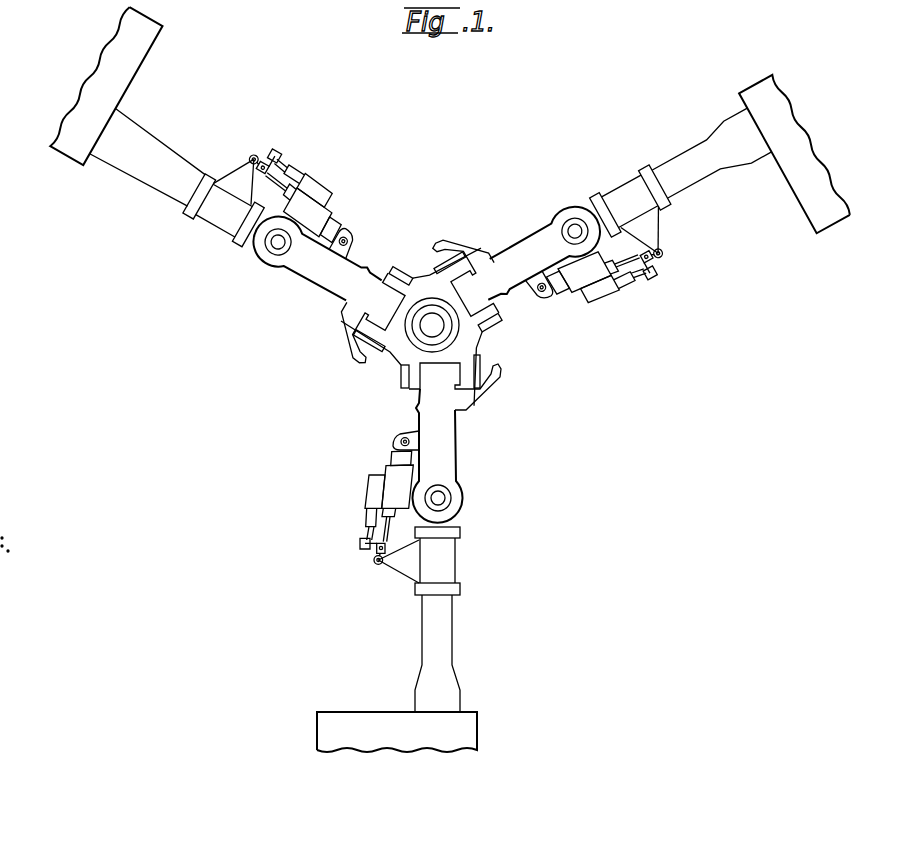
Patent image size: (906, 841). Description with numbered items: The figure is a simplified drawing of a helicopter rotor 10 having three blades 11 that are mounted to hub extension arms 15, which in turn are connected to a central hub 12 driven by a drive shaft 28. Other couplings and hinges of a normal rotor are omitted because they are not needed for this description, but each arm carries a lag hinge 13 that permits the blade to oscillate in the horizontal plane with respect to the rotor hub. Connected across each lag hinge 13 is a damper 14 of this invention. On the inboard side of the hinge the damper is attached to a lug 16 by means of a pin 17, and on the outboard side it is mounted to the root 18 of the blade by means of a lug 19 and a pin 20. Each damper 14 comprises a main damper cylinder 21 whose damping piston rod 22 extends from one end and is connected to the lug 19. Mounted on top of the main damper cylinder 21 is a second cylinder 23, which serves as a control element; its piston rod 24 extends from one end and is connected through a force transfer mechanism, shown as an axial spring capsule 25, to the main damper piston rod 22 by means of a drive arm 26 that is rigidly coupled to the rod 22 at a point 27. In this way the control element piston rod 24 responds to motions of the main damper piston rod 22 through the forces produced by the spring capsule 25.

The helicopter rotor 10 is at (416, 248).
The blade 11 is at (473, 730).
The hub 12 is at (389, 352).
The lag hinge 13 is at (451, 497).
The damper 14 is at (472, 336).
The hub extension arm 15 is at (451, 438).
The lug 16 is at (346, 249).
The pin 17 is at (349, 240).
The root 18 is at (452, 640).
The lug 19 is at (235, 175).
The pin 20 is at (255, 155).
The main damper cylinder 21 is at (331, 213).
The damping piston rod 22 is at (277, 173).
The second cylinder 23 is at (321, 179).
The piston rod 24 is at (303, 161).
The axial spring capsule 25 is at (290, 153).
The drive arm 26 is at (267, 160).
The point 27 is at (246, 186).
The drive shaft 28 is at (445, 328).